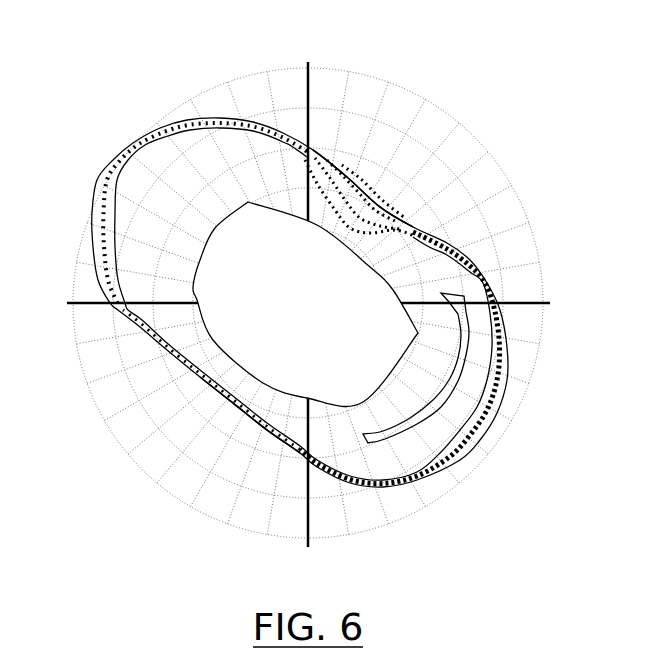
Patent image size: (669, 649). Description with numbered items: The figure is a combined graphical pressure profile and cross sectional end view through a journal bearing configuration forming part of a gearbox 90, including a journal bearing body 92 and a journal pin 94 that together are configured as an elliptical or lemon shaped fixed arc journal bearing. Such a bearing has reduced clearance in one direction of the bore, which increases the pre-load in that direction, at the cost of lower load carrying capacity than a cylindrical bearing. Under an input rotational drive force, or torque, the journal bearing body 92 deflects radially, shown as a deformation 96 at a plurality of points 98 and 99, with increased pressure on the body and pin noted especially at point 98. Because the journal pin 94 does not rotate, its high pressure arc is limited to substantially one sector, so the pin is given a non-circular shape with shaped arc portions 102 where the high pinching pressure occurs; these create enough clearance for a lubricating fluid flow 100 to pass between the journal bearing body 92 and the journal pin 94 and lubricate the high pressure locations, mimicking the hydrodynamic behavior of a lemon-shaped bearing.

The gearbox 90 is at (513, 59).
The journal bearing body 92 is at (502, 293).
The journal pin 94 is at (285, 316).
The deformation 96 is at (369, 171).
The point 98 is at (377, 208).
The point 99 is at (275, 435).
The lubricating fluid flow 100 is at (405, 435).
The shaped arc portions 102 is at (272, 210).